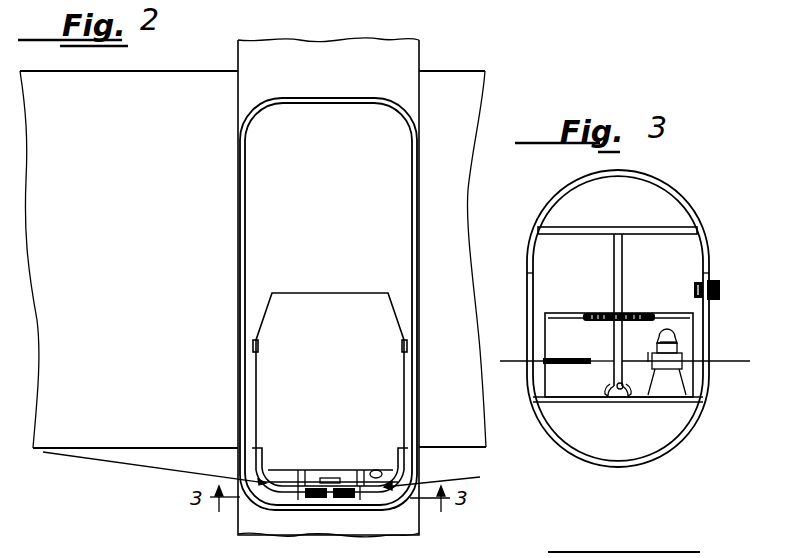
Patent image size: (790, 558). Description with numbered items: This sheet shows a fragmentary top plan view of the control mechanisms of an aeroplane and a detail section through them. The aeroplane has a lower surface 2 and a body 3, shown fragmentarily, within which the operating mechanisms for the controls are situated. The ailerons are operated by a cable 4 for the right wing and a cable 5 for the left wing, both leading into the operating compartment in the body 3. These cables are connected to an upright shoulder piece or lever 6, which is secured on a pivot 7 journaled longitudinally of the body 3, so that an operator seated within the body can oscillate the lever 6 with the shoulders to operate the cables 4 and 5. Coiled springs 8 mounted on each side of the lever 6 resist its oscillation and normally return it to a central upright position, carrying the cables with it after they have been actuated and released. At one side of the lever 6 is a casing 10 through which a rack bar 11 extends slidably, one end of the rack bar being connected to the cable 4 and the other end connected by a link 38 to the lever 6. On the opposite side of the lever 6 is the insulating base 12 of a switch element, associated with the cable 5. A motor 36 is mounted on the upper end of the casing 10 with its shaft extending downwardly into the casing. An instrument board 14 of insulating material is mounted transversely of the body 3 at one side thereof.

In FIG. 2, the lower surface 2 is at (253, 259).
In FIG. 2, the body 3 is at (328, 287).
In FIG. 3, the body 3 is at (680, 203).
In FIG. 2, the cable 4 is at (447, 485).
In FIG. 3, the cable 4 is at (733, 361).
In FIG. 2, the cable 5 is at (153, 470).
In FIG. 3, the cable 5 is at (522, 361).
In FIG. 2, the upright shoulder piece or lever 6 is at (283, 484).
In FIG. 3, the upright shoulder piece or lever 6 is at (623, 276).
In FIG. 3, the pivot 7 is at (617, 390).
In FIG. 2, the coiled springs 8 is at (345, 500).
In FIG. 3, the coiled springs 8 is at (627, 306).
In FIG. 3, the casing 10 is at (666, 372).
In FIG. 3, the rack bar 11 is at (648, 360).
In FIG. 3, the insulating base 12 is at (563, 365).
In FIG. 3, the instrument board 14 is at (720, 294).
In FIG. 2, the motor 36 is at (376, 472).
In FIG. 3, the motor 36 is at (677, 342).
In FIG. 3, the link 38 is at (628, 383).